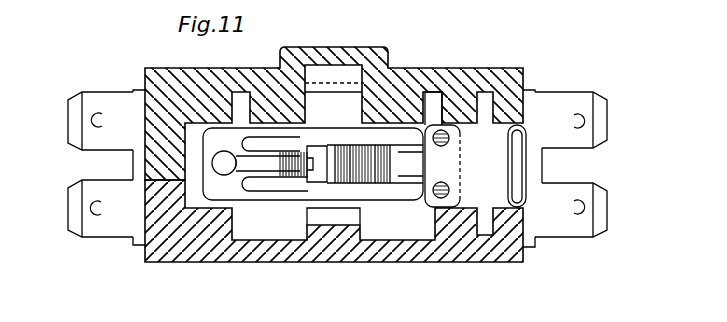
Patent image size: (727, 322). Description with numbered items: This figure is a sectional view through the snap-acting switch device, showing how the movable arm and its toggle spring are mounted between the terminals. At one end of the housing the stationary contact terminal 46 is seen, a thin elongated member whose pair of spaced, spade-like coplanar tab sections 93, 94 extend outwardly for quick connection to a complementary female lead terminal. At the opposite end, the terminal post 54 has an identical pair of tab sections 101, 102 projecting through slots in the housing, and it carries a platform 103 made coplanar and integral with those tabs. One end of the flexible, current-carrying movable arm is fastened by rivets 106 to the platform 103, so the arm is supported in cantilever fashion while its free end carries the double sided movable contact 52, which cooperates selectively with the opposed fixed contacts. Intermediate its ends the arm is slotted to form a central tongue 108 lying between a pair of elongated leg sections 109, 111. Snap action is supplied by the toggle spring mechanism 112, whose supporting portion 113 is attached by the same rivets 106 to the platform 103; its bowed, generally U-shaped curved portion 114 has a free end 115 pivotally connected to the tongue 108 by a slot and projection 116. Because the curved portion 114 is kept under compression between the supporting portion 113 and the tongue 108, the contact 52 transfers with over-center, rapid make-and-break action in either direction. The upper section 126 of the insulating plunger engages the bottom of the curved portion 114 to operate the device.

The stationary contact terminal 46 is at (133, 163).
The double sided movable contact 52 is at (222, 152).
The terminal post 54 is at (543, 165).
The tab section 93 is at (114, 226).
The tab section 94 is at (97, 100).
The tab section 101 is at (574, 99).
The tab section 102 is at (568, 224).
The platform 103 is at (484, 193).
The rivets 106 is at (447, 187).
The central tongue 108 is at (258, 162).
The elongated leg section 109 is at (272, 135).
The elongated leg section 111 is at (283, 195).
The toggle spring mechanism 112 is at (350, 138).
The supporting portion 113 is at (415, 160).
The curved portion 114 is at (329, 222).
The free end 115 is at (312, 175).
The slot and projection 116 is at (318, 161).
The upper section 126 is at (358, 105).